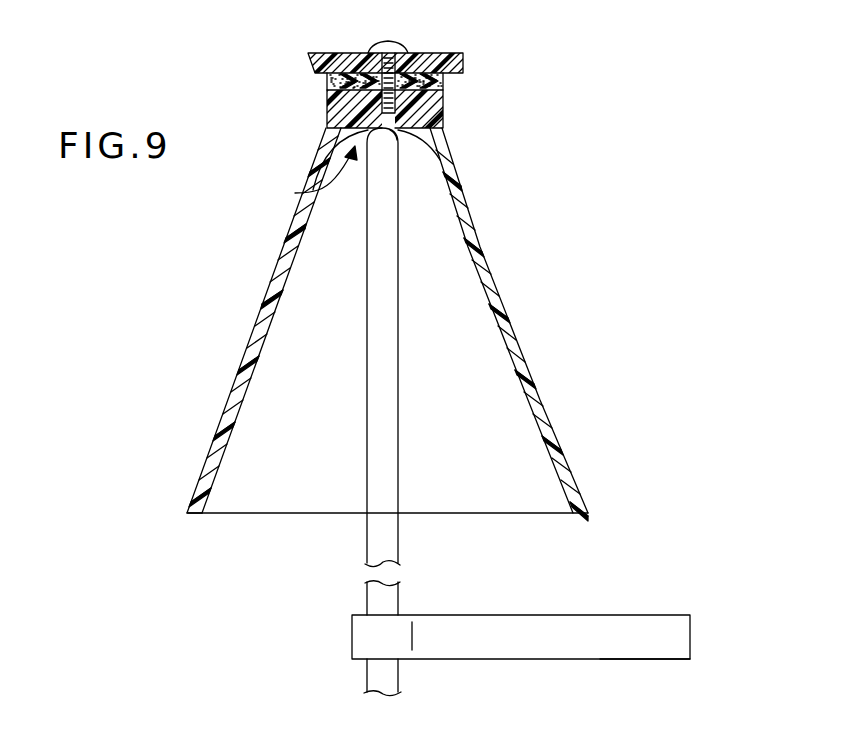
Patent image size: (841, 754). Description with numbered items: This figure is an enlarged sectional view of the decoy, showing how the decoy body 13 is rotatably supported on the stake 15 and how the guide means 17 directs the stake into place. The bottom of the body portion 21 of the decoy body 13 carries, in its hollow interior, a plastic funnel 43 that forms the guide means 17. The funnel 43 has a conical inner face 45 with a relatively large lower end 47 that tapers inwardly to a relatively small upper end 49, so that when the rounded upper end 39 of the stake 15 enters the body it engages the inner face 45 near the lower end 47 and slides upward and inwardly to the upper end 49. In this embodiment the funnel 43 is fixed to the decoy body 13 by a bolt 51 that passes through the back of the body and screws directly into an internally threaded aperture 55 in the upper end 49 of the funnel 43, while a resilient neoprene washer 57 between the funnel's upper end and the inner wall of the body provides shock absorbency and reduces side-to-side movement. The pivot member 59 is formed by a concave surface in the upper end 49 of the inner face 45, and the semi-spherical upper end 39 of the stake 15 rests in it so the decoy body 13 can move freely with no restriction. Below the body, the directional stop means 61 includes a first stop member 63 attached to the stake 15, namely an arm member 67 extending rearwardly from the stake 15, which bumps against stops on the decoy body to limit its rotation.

The decoy body 13 is at (386, 64).
The stake 15 is at (347, 534).
The guide means 17 is at (238, 525).
The body portion 21 is at (342, 52).
The upper end of the stake 39 is at (385, 157).
The funnel 43 is at (262, 322).
The inner face 45 is at (552, 467).
The lower end of the funnel 47 is at (220, 516).
The upper end of the funnel 49 is at (335, 108).
The bolt 51 is at (404, 46).
The internally threaded aperture 55 is at (414, 109).
The resilient washer 57 is at (444, 79).
The pivot member 59 is at (351, 168).
The directional stop means 61 is at (545, 628).
The first stop member 63 is at (738, 645).
The arm member 67 is at (620, 652).